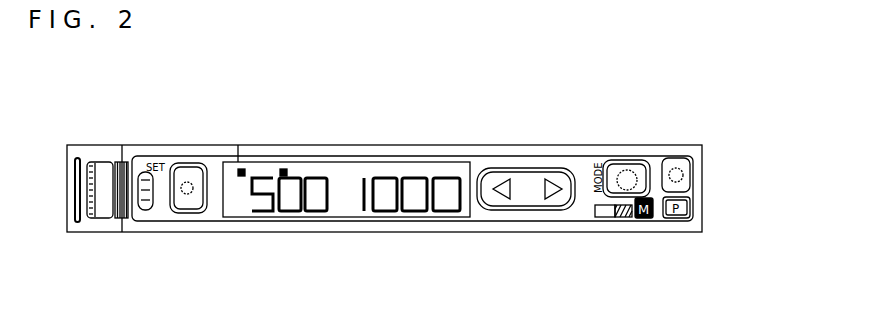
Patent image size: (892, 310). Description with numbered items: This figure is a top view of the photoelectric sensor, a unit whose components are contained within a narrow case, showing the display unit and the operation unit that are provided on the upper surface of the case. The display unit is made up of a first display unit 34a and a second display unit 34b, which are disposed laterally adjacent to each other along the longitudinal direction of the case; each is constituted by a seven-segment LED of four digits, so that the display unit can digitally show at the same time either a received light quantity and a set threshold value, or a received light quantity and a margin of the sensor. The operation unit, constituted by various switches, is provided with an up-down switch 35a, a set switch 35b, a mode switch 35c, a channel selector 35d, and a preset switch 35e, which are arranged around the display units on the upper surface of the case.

The first display unit 34a is at (293, 181).
The second display unit 34b is at (420, 176).
The up-down switch 35a is at (516, 182).
The set switch 35b is at (174, 166).
The mode switch 35c is at (622, 165).
The channel selector 35d is at (600, 214).
The preset switch 35e is at (678, 156).